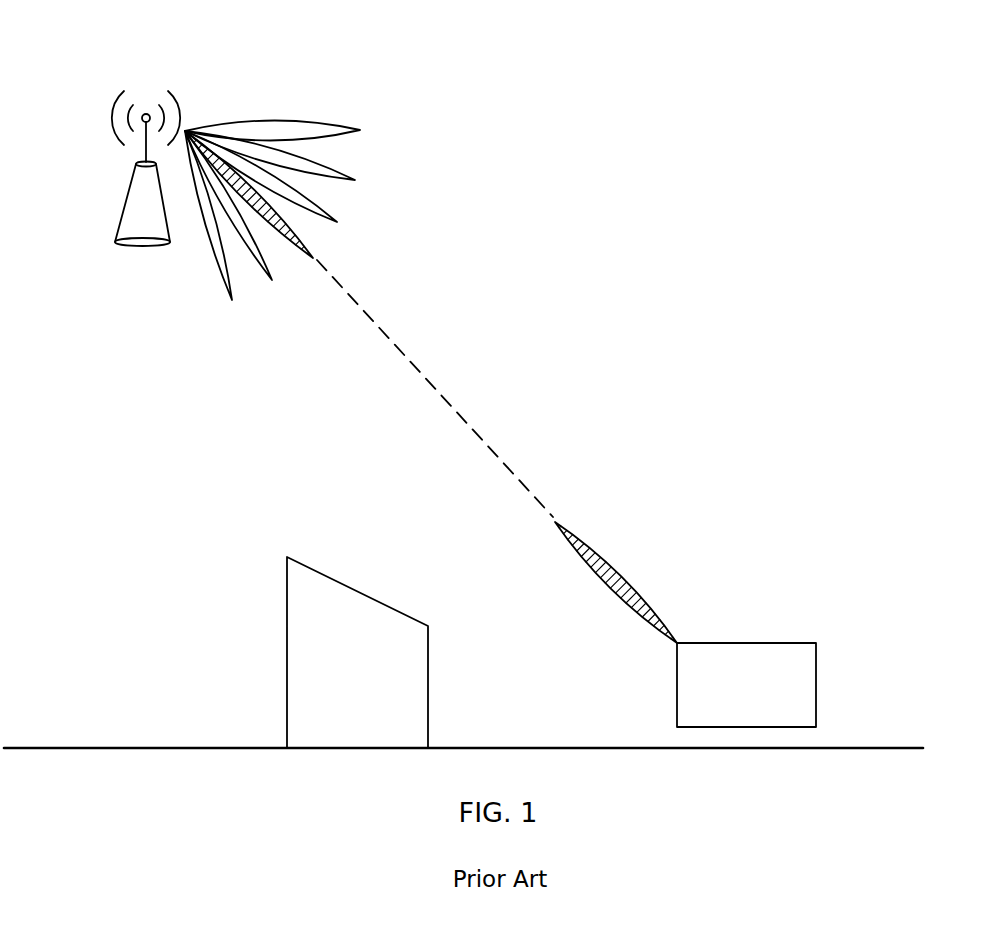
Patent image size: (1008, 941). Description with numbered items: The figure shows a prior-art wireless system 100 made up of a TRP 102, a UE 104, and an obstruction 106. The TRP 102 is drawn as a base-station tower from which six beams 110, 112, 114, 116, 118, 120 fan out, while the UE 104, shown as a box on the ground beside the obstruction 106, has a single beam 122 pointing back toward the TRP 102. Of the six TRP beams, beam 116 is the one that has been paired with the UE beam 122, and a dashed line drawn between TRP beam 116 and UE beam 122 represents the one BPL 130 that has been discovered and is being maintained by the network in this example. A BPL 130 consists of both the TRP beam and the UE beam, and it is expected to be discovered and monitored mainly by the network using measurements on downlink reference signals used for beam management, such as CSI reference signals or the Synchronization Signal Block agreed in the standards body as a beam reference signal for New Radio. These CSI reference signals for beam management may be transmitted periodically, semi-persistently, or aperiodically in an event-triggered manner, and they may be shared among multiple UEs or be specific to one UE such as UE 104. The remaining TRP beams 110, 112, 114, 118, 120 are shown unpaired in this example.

The system 100 is at (585, 98).
The TRP 102 is at (188, 105).
The UE 104 is at (740, 642).
The obstruction 106 is at (288, 556).
The TRP beam 110 is at (358, 131).
The TRP beam 112 is at (346, 171).
The TRP beam 114 is at (331, 211).
The TRP beam 116 is at (313, 253).
The TRP beam 118 is at (272, 281).
The TRP beam 120 is at (212, 259).
The UE beam 122 is at (556, 520).
The BPL 130 is at (423, 345).